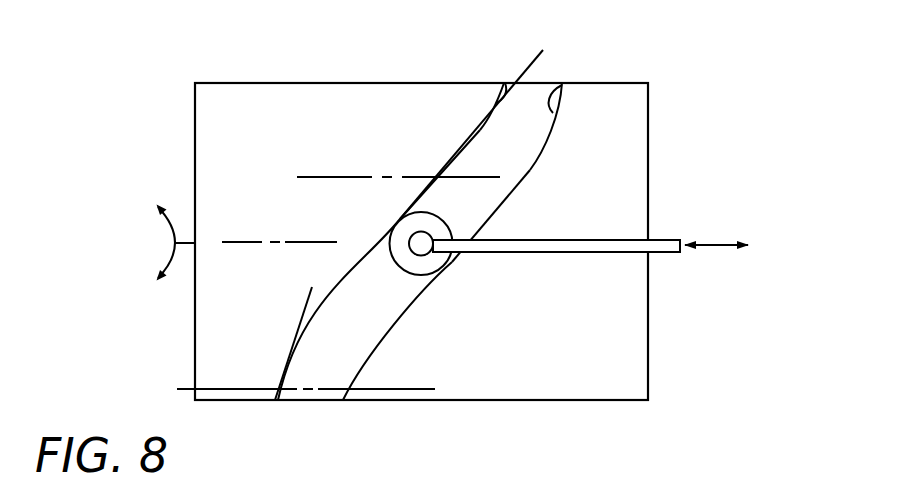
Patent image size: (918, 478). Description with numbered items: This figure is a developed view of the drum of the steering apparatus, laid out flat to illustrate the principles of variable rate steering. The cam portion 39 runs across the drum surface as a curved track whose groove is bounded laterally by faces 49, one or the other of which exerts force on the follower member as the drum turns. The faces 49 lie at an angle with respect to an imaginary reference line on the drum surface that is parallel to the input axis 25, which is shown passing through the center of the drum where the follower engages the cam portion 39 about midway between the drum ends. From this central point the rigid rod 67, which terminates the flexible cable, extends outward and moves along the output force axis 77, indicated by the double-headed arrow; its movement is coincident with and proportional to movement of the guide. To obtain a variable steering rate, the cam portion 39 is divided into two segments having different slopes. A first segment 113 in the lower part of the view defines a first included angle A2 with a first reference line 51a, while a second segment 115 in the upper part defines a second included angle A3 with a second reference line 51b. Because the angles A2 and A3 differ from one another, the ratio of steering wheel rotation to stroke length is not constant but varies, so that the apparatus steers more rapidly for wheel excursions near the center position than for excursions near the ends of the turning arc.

The input axis 25 is at (238, 242).
The cam portion 39 is at (532, 127).
The faces 49 is at (505, 83).
The first reference line 51a is at (402, 389).
The second reference line 51b is at (328, 177).
The rigid rod 67 is at (522, 240).
The output force axis 77 is at (715, 243).
The first segment 113 is at (345, 358).
The second segment 115 is at (515, 148).
The first included angle A2 is at (303, 343).
The second included angle A3 is at (471, 134).